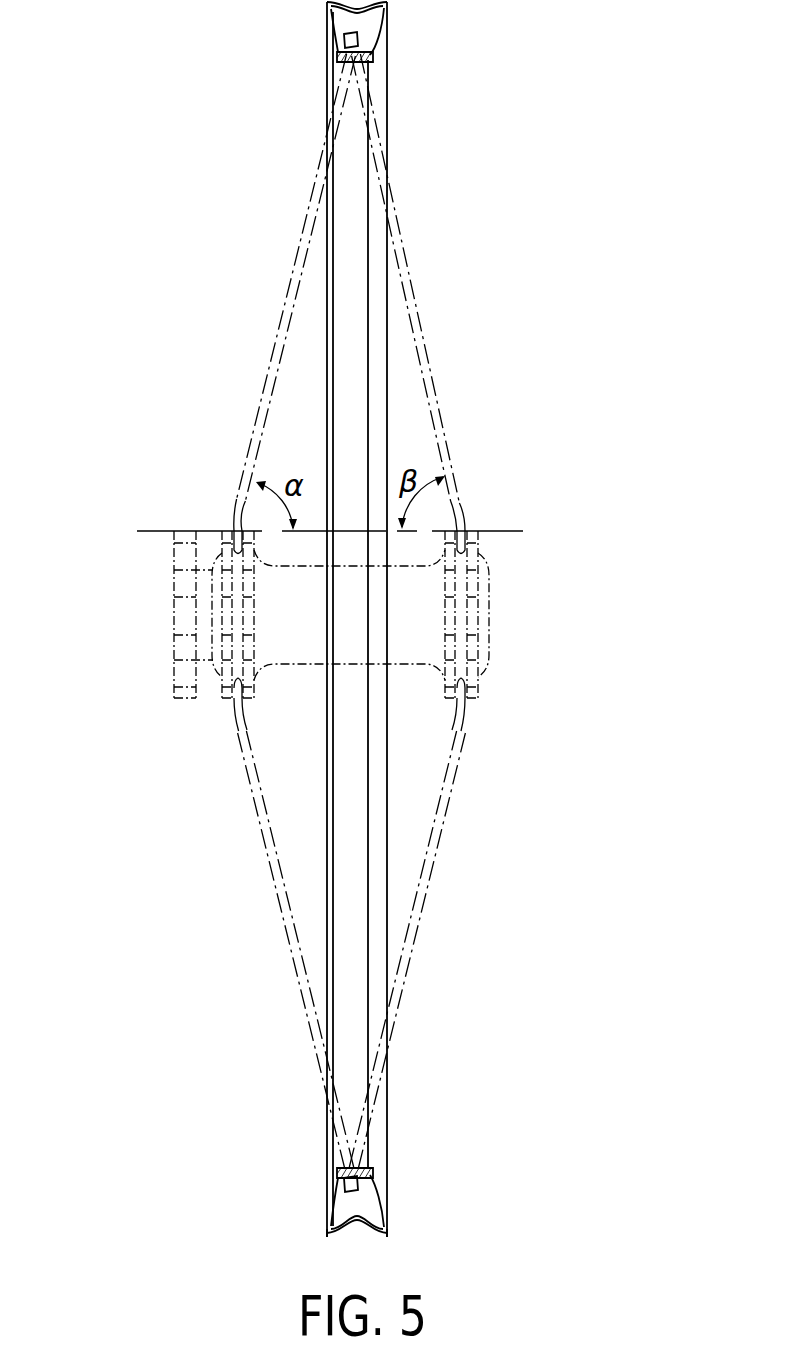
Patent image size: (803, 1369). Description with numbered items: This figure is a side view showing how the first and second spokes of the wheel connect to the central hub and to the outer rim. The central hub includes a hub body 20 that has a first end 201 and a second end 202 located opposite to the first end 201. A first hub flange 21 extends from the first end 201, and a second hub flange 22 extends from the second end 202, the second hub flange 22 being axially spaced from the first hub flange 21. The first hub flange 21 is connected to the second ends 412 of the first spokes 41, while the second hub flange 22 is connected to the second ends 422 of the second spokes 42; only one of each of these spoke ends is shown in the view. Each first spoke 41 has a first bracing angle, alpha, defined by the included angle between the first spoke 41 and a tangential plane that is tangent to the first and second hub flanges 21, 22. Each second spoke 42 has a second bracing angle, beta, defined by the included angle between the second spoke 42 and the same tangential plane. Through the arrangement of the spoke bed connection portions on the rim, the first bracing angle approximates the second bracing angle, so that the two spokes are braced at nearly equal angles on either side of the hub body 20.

The hub body 20 is at (415, 528).
The first end 201 is at (172, 633).
The second end 202 is at (492, 618).
The first hub flange 21 is at (225, 527).
The second hub flange 22 is at (475, 530).
The first spoke 41 is at (277, 348).
The second end of first spoke 412 is at (232, 527).
The second spoke 42 is at (425, 334).
The second end of second spoke 422 is at (463, 522).